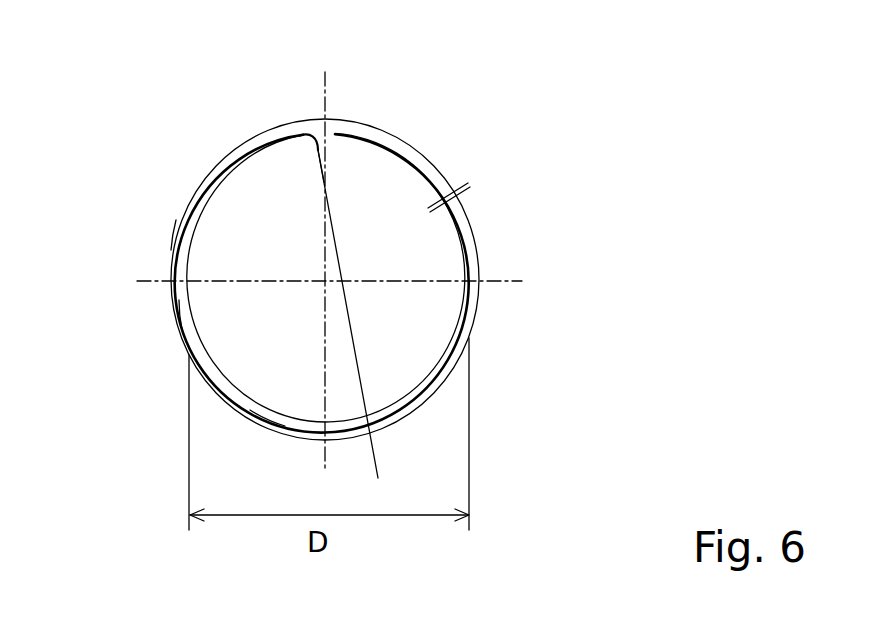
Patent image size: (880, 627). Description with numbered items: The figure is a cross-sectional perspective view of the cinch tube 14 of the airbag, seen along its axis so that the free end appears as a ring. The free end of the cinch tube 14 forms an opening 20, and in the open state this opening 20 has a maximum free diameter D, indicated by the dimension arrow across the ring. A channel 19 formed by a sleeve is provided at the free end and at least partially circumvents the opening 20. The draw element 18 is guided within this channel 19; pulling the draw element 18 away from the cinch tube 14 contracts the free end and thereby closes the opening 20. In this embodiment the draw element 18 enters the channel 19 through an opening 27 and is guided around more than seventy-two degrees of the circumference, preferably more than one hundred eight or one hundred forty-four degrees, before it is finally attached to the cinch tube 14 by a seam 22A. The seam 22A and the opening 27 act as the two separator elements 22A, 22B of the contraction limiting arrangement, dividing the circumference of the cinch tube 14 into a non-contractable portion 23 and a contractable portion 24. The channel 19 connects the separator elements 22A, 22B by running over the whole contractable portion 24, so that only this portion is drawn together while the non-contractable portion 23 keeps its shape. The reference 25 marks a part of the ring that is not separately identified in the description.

The cinch tube 14 is at (172, 222).
The draw element 18 is at (353, 347).
The channel 19 is at (173, 290).
The opening 20 is at (410, 338).
The seam 22A is at (455, 193).
The separator element 22B is at (312, 132).
The non-contractable portion 23 is at (373, 137).
The contractable portion 24 is at (177, 315).
The outer circumferential surface 25 is at (268, 423).
The opening 27 is at (321, 166).